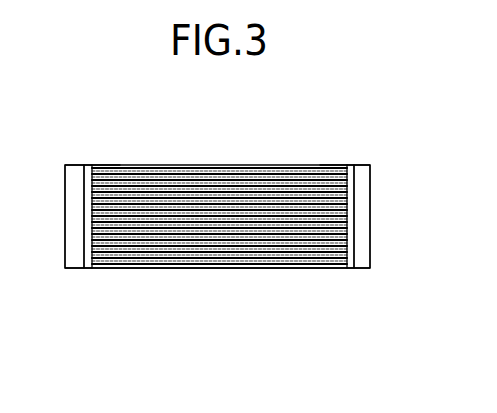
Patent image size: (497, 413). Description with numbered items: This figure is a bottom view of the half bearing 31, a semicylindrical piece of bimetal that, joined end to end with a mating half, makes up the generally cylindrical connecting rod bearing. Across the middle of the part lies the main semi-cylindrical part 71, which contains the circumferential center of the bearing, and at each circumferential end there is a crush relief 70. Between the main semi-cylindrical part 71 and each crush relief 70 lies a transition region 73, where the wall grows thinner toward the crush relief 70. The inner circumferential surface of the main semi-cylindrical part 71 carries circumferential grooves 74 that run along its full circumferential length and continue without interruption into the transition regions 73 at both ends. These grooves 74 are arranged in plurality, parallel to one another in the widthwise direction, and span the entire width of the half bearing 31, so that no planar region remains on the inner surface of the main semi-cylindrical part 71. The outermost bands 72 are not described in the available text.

The half bearing 31 is at (338, 138).
The crush relief 70 is at (89, 268).
The main semi-cylindrical part 71 is at (187, 298).
The header tank 72 is at (73, 268).
The transition region 73 is at (105, 165).
The circumferential groove 74 is at (237, 240).